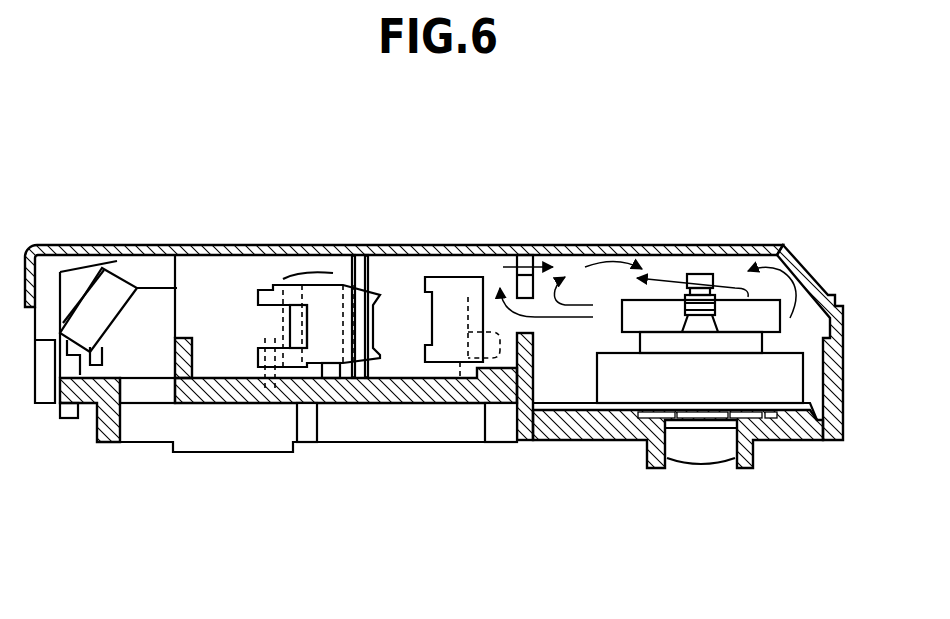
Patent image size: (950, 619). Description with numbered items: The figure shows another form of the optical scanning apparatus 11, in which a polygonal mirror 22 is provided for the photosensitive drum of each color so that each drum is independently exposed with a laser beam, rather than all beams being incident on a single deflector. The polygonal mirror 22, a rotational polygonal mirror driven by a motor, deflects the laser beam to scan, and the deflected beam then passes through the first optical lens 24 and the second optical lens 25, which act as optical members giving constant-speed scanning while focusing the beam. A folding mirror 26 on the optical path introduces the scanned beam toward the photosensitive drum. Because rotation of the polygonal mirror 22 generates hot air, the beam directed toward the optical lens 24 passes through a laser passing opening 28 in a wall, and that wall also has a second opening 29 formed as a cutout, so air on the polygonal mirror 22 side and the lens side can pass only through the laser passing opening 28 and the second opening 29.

The optical scanning apparatus 11 is at (555, 430).
The polygonal mirror 22 is at (767, 310).
The first optical lens 24 is at (447, 295).
The second optical lens 25 is at (297, 418).
The folding mirror 26 is at (123, 288).
The laser passing opening 28 is at (528, 325).
The second opening 29 is at (517, 257).